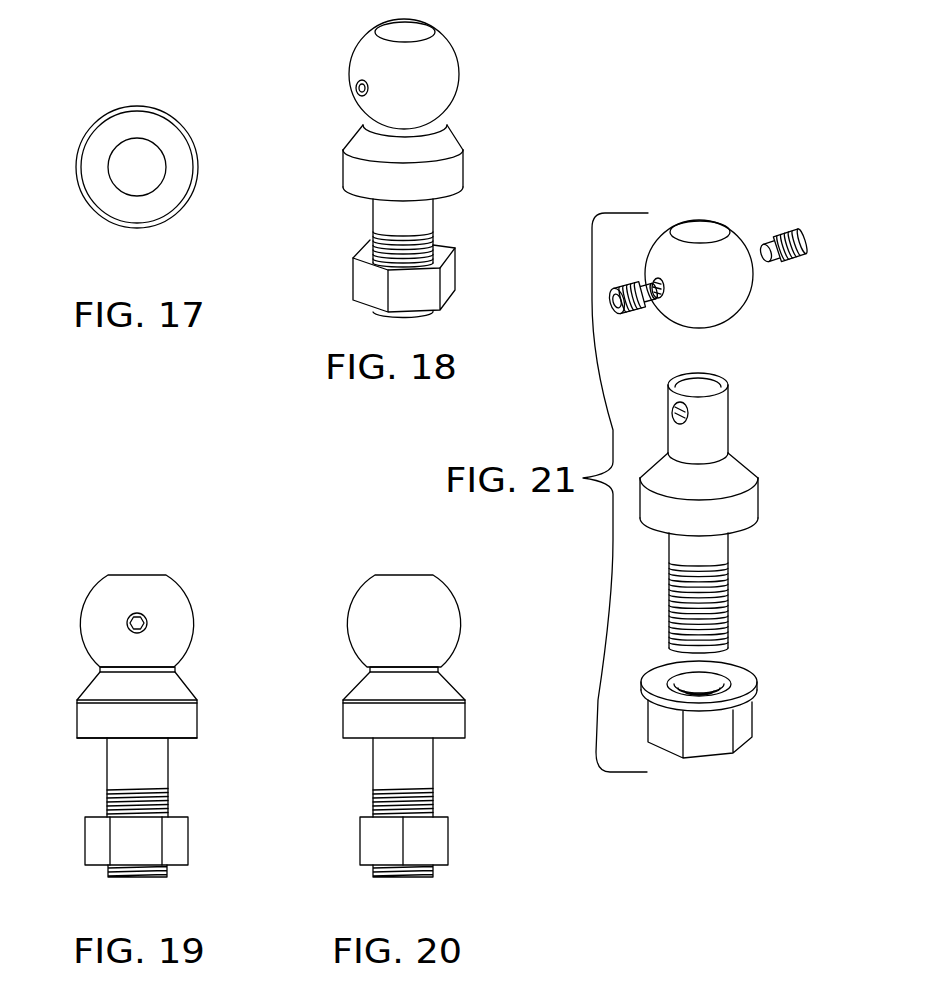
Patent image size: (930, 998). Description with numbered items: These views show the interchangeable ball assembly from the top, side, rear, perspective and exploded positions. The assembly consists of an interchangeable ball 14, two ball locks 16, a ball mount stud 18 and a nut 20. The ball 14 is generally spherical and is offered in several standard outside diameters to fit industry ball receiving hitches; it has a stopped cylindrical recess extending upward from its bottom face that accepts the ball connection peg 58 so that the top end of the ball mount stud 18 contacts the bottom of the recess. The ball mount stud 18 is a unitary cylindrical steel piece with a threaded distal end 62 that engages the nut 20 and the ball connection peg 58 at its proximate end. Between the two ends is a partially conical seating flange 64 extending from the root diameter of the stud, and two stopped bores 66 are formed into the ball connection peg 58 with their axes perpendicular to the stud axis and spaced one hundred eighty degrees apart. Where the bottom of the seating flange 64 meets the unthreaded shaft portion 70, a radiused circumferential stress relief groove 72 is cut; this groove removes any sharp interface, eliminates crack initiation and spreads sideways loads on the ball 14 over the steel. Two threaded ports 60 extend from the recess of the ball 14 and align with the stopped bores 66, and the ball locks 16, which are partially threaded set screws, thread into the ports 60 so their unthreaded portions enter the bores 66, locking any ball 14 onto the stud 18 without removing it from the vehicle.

In FIG. 21, the interchangeable ball 14 is at (743, 228).
In FIG. 21, the ball lock 16 is at (770, 260).
In FIG. 18, the ball mount stud 18 is at (322, 229).
In FIG. 20, the nut 20 is at (440, 842).
In FIG. 21, the nut 20 is at (740, 732).
In FIG. 21, the ball connection peg 58 is at (732, 415).
In FIG. 19, the threaded port 60 is at (184, 742).
In FIG. 21, the threaded port 60 is at (652, 284).
In FIG. 19, the threaded distal end 62 is at (108, 807).
In FIG. 21, the threaded distal end 62 is at (730, 608).
In FIG. 20, the seating flange 64 is at (342, 720).
In FIG. 21, the seating flange 64 is at (757, 498).
In FIG. 21, the stopped bore 66 is at (670, 417).
In FIG. 20, the unthreaded shaft portion 70 is at (388, 772).
In FIG. 19, the stress relief groove 72 is at (105, 740).